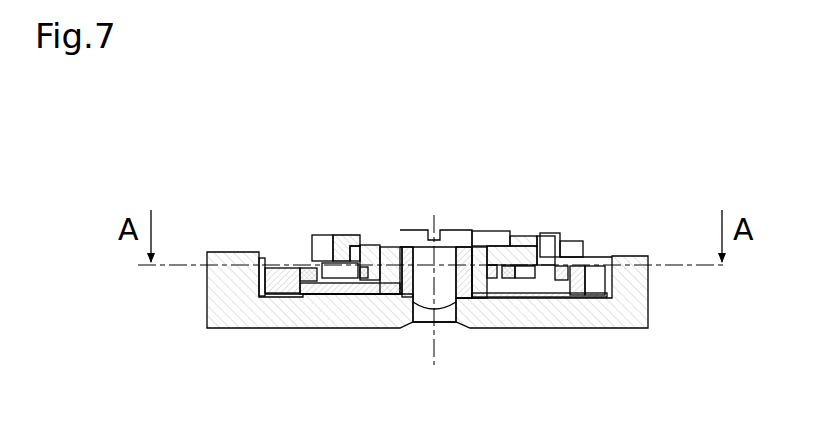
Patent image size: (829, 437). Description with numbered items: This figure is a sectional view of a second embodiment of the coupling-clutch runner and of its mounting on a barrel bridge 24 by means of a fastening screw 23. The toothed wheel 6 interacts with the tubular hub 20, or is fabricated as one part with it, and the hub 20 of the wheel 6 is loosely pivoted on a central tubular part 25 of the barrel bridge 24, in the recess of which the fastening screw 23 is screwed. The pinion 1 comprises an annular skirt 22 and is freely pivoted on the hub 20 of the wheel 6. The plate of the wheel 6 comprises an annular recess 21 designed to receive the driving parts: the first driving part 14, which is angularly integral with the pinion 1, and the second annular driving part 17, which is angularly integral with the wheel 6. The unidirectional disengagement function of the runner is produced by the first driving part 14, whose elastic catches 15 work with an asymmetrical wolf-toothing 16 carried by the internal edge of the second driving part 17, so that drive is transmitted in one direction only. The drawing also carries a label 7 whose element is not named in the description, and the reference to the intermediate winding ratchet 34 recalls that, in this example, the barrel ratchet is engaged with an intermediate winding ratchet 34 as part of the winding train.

The pinion 1 is at (356, 263).
The toothed wheel 6 is at (289, 284).
The cover 7 is at (597, 272).
The first driving part 14 is at (364, 282).
The elastic catches 15 is at (323, 274).
The asymmetrical wolf-toothing 16 is at (556, 283).
The second annular driving part 17 is at (300, 273).
The tubular hub 20 is at (470, 248).
The annular recess 21 is at (540, 279).
The annular skirt 22 is at (490, 282).
The fastening screw 23 is at (492, 255).
The barrel bridge 24 is at (230, 318).
The central tubular part 25 is at (373, 258).
The intermediate winding ratchet 34 is at (696, 106).